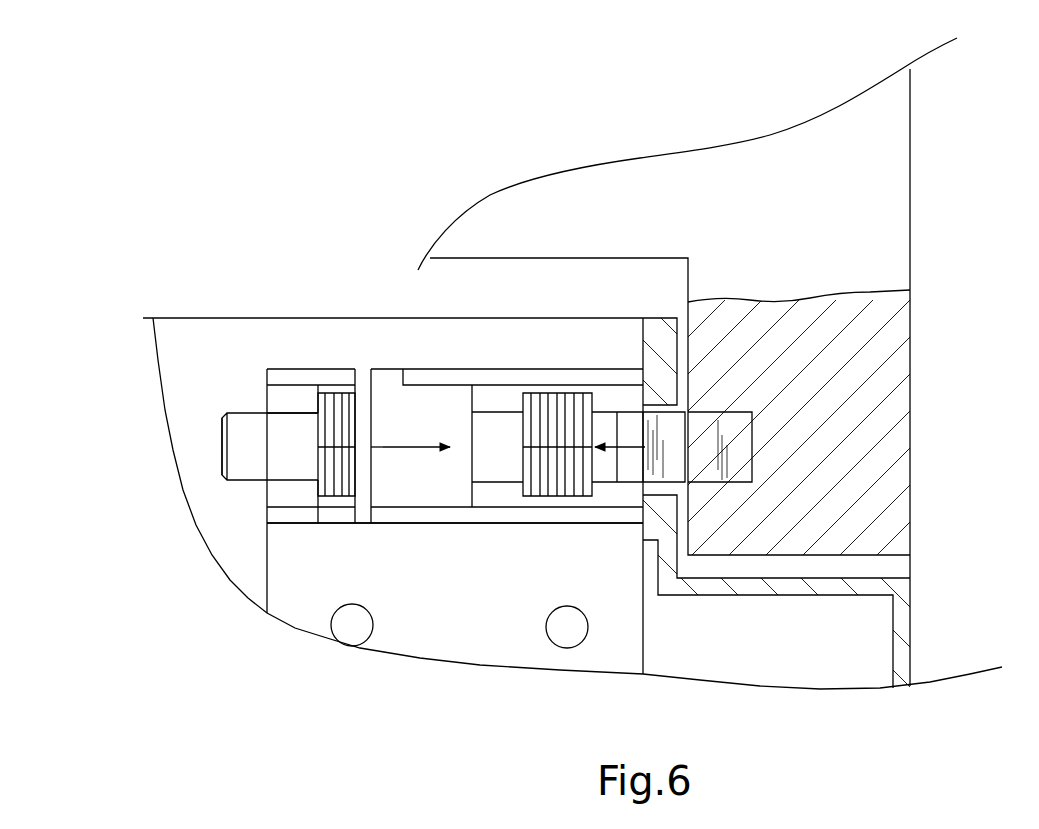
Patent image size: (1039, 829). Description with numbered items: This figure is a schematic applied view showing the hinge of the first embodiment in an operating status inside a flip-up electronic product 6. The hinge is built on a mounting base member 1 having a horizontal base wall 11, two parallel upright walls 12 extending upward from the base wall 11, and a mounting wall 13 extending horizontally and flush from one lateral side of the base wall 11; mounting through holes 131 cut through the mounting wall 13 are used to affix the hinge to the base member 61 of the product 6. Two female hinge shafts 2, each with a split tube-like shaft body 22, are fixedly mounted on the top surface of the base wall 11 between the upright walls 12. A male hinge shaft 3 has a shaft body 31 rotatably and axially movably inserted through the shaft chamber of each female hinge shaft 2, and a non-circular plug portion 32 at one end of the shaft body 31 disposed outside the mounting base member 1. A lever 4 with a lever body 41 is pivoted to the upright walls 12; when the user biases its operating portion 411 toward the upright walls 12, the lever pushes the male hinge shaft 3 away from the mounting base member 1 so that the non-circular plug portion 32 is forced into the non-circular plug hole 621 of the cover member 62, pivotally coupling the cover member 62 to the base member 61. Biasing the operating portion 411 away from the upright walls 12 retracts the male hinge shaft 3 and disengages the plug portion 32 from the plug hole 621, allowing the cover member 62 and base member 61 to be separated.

The mounting base member 1 is at (264, 562).
The horizontal base wall 11 is at (272, 396).
The upright wall 12 is at (288, 380).
The mounting wall 13 is at (343, 584).
The mounting through hole 131 is at (375, 622).
The female hinge shaft 2 is at (316, 390).
The split tube-like shaft body 22 is at (351, 400).
The male hinge shaft 3 is at (226, 411).
The shaft body 31 is at (223, 436).
The non-circular plug portion 32 is at (642, 425).
The lever 4 is at (387, 366).
The lever body 41 is at (435, 386).
The operating portion 411 is at (388, 492).
The flip-up electronic product 6 is at (932, 399).
The base member 61 is at (905, 645).
The cover member 62 is at (905, 492).
The non-circular plug hole 621 is at (727, 412).